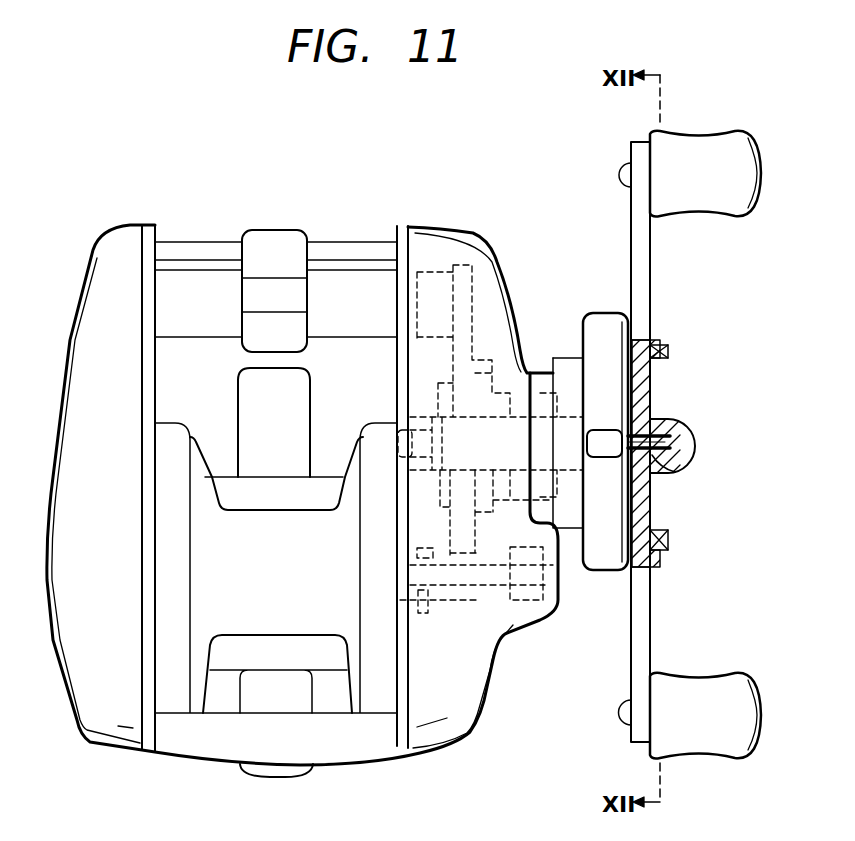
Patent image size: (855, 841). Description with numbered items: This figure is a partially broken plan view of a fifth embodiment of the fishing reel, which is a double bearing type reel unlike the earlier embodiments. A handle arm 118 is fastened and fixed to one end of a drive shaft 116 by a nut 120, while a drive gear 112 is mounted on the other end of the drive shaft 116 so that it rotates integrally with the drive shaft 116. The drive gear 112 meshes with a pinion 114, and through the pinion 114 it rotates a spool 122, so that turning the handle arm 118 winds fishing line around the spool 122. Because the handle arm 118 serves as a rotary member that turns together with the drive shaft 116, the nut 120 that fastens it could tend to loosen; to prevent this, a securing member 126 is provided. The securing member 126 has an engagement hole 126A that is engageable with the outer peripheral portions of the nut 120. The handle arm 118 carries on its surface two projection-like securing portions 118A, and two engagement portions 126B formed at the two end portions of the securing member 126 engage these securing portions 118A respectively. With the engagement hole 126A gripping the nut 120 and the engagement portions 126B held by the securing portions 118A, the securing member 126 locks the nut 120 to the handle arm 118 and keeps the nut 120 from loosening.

The drive gear 112 is at (477, 363).
The pinion 114 is at (460, 607).
The drive shaft 116 is at (472, 470).
The handle arm 118 is at (647, 645).
The securing portions 118A is at (668, 350).
The nut 120 is at (672, 422).
The spool 122 is at (293, 582).
The securing member 126 is at (658, 510).
The engagement hole 126A is at (668, 467).
The engagement portions 126B is at (658, 340).